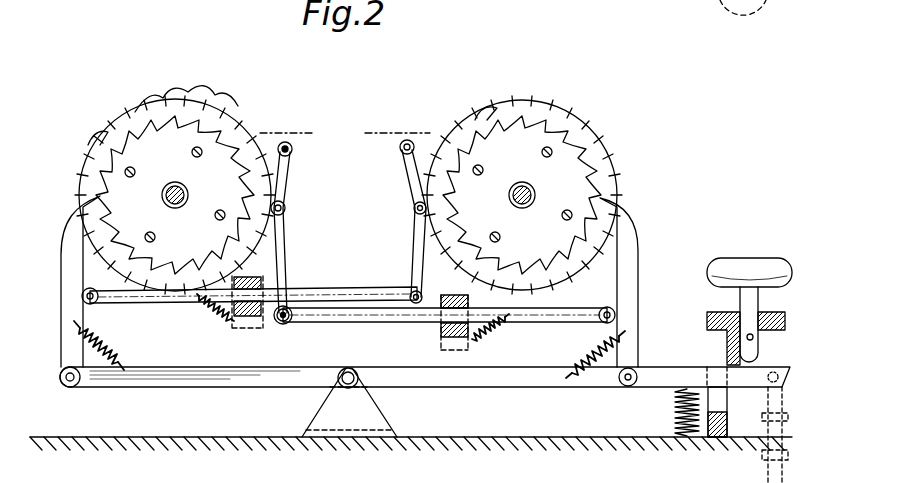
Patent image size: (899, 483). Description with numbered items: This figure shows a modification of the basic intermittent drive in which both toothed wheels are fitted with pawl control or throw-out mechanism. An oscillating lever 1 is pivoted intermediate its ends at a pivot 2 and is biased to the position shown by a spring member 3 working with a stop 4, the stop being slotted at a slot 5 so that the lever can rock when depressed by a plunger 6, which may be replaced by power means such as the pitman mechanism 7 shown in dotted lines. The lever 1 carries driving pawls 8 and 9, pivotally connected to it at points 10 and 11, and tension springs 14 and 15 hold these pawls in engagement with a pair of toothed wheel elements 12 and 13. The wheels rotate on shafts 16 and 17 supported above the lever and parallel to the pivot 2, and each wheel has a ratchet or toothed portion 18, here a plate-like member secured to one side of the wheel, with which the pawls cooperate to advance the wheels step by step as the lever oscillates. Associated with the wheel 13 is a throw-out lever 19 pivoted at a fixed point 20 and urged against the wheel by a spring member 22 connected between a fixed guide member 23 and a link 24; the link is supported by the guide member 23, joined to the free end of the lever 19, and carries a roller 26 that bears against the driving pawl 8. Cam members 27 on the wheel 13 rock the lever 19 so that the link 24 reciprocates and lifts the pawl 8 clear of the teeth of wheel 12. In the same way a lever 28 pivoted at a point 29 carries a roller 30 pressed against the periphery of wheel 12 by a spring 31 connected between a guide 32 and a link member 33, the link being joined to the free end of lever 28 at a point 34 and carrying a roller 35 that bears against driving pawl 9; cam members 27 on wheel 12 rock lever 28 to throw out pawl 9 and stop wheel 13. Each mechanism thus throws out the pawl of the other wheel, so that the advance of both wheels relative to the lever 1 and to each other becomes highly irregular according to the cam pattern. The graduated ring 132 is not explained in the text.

The oscillating lever 1 is at (505, 384).
The pivot 2 is at (362, 383).
The spring member 3 is at (672, 408).
The stop 4 is at (706, 328).
The slot 5 is at (728, 402).
The plunger 6 is at (740, 262).
The pitman mechanism 7 is at (768, 447).
The driving pawl 8 is at (62, 274).
The driving pawl 9 is at (623, 277).
The pivotal connection point 10 is at (63, 385).
The pivotal connection point 11 is at (622, 385).
The toothed wheel element 12 is at (118, 113).
The toothed wheel element 13 is at (583, 100).
The tension spring 14 is at (118, 360).
The tension spring 15 is at (580, 355).
The shaft 16 is at (190, 192).
The shaft 17 is at (534, 192).
The ratchet or toothed portion 18 is at (578, 160).
The lever 19 is at (409, 222).
The fixed pivot point 20 is at (410, 130).
The spring member 22 is at (210, 308).
The guide member 23 is at (252, 277).
The link 24 is at (322, 292).
The roller 26 is at (96, 305).
The cam members 27 is at (88, 138).
The lever 28 is at (289, 219).
The pivot point 29 is at (292, 146).
The roller 30 is at (283, 202).
The spring 31 is at (488, 330).
The guide 32 is at (440, 326).
The link member 33 is at (370, 322).
The connection point 34 is at (285, 323).
The roller 35 is at (606, 307).
The graduated ring 132 is at (240, 110).